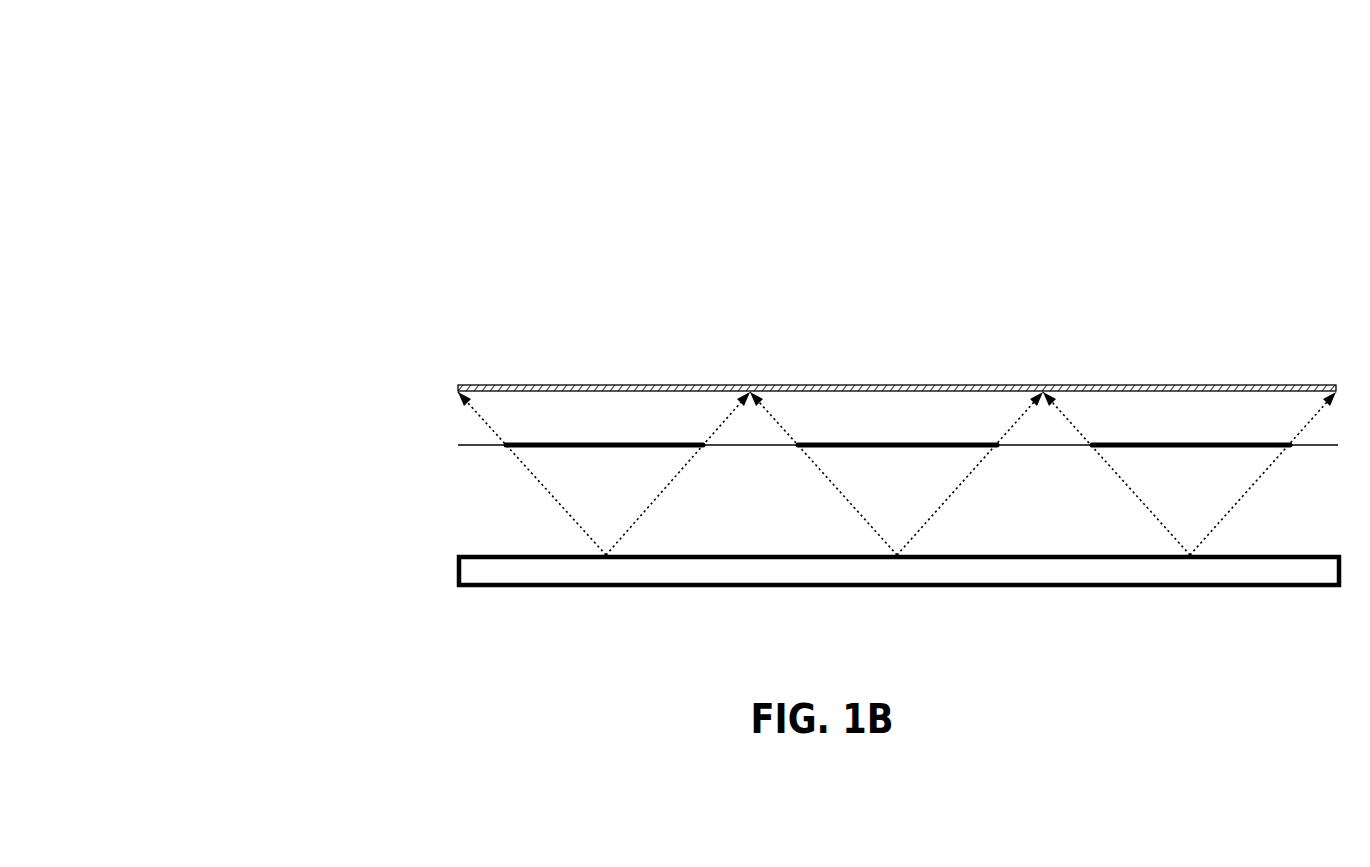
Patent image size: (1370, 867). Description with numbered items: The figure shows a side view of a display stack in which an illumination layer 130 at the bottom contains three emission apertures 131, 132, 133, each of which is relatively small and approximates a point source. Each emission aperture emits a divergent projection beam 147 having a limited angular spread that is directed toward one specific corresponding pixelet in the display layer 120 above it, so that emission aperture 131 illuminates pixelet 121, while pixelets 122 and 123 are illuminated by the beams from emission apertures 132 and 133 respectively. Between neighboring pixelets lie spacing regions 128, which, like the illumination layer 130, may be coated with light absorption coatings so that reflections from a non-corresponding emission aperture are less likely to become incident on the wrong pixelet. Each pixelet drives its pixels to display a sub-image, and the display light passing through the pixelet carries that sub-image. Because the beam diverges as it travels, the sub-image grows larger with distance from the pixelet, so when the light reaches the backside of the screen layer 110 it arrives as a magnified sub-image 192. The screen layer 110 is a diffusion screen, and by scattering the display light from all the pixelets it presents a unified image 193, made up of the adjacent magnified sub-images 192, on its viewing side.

The screen layer 110 is at (411, 388).
The display layer 120 is at (411, 445).
The pixelet 121 is at (613, 443).
The pixelet 122 is at (905, 443).
The pixelet 123 is at (1198, 443).
The spacing region 128 is at (503, 453).
The illumination layer 130 is at (411, 573).
The emission aperture 131 is at (606, 558).
The emission aperture 132 is at (897, 558).
The emission aperture 133 is at (1190, 558).
The divergent projection beam 147 is at (556, 487).
The magnified sub-image 192 is at (1335, 335).
The unified image 193 is at (1335, 183).